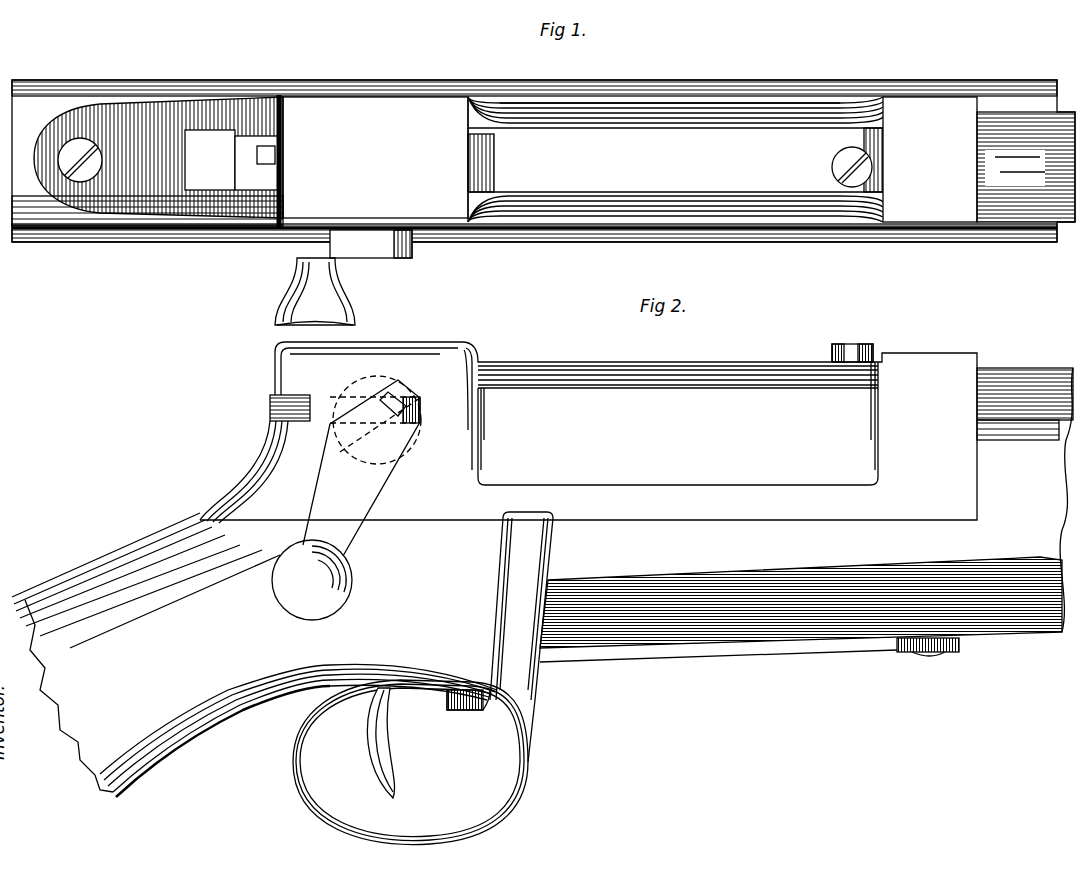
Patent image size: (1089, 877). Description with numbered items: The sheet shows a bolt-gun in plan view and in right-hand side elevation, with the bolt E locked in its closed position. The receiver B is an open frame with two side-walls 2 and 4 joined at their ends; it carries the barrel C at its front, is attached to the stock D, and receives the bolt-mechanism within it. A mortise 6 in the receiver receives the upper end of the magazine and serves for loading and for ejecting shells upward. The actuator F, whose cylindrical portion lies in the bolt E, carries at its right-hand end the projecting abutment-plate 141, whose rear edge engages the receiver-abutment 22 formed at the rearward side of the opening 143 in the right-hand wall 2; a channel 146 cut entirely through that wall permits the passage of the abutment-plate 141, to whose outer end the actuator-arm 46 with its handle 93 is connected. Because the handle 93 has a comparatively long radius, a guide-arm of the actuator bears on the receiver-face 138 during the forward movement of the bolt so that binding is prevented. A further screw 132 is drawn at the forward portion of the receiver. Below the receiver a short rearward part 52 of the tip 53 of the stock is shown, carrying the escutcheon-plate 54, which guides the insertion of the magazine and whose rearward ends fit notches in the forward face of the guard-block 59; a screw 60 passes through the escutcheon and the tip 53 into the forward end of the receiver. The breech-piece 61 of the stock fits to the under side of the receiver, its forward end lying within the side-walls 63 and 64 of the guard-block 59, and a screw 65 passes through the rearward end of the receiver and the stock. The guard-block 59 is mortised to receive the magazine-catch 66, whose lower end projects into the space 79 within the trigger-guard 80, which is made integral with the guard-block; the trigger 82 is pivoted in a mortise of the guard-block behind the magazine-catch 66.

In FIG. 1, the side-wall 2 is at (704, 196).
In FIG. 2, the side-wall 2 is at (568, 388).
In FIG. 1, the side-wall 4 is at (668, 128).
In FIG. 1, the mortise 6 is at (626, 193).
In FIG. 2, the receiver-abutment 22 is at (330, 428).
In FIG. 1, the actuator-arm 46 is at (336, 258).
In FIG. 2, the actuator-arm 46 is at (325, 497).
In FIG. 1, the rearward part of tip 52 is at (845, 235).
In FIG. 2, the rearward part of tip 52 is at (815, 625).
In FIG. 1, the tip 53 is at (1043, 232).
In FIG. 2, the tip 53 is at (1027, 610).
In FIG. 2, the escutcheon-plate 54 is at (678, 650).
In FIG. 2, the guard-block 59 is at (525, 678).
In FIG. 2, the screw 60 is at (936, 652).
In FIG. 2, the breech-piece 61 is at (232, 677).
In FIG. 1, the side-wall of guard-block 63 is at (537, 240).
In FIG. 2, the side-wall of guard-block 63 is at (530, 556).
In FIG. 1, the side-wall of guard-block 64 is at (545, 84).
In FIG. 1, the screw 65 is at (82, 162).
In FIG. 2, the magazine-catch 66 is at (472, 710).
In FIG. 2, the space within the trigger-guard 79 is at (497, 745).
In FIG. 2, the trigger-guard 80 is at (305, 797).
In FIG. 2, the trigger 82 is at (386, 730).
In FIG. 1, the handle 93 is at (296, 302).
In FIG. 2, the handle 93 is at (336, 580).
In FIG. 1, the receiver screw 132 is at (838, 162).
In FIG. 2, the receiver screw 132 is at (845, 353).
In FIG. 1, the receiver-face 138 is at (262, 178).
In FIG. 1, the abutment-plate 141 is at (414, 250).
In FIG. 2, the abutment-plate 141 is at (388, 392).
In FIG. 2, the opening 143 is at (412, 410).
In FIG. 2, the opening 146 is at (285, 408).
In FIG. 1, the receiver B is at (775, 108).
In FIG. 2, the receiver B is at (728, 375).
In FIG. 1, the barrel C is at (1010, 122).
In FIG. 2, the barrel C is at (1010, 383).
In FIG. 1, the stock D is at (70, 238).
In FIG. 2, the stock D is at (95, 557).
In FIG. 1, the bolt E is at (675, 159).
In FIG. 1, the actuator F is at (371, 244).
In FIG. 2, the actuator F is at (375, 421).